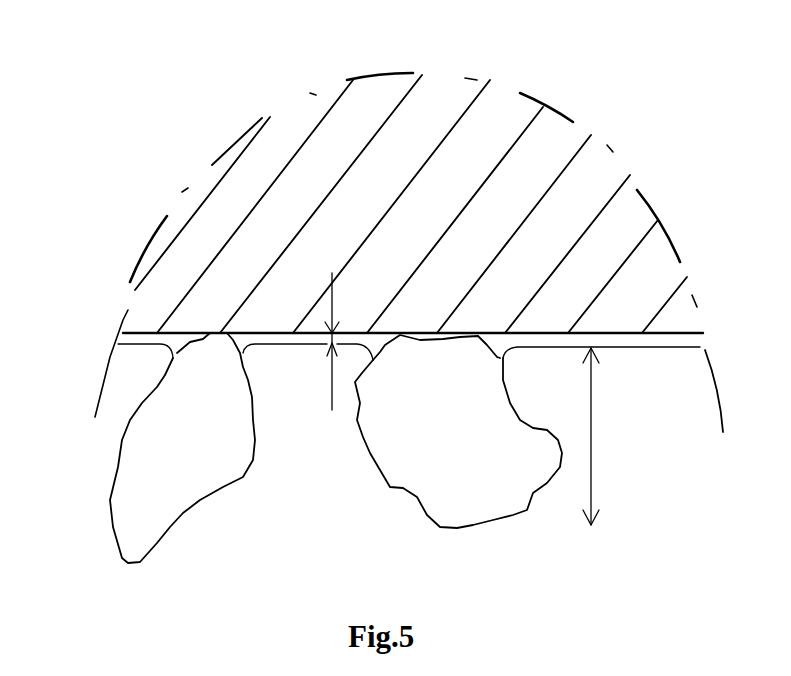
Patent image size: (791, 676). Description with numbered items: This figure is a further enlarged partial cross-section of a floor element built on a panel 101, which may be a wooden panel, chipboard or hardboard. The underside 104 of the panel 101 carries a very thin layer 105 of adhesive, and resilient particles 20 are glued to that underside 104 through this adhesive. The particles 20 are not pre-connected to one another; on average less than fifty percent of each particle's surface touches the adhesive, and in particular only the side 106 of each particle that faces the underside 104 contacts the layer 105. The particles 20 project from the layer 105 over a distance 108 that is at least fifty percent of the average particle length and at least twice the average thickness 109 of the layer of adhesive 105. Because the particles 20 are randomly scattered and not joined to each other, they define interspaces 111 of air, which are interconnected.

The panel 101 is at (297, 128).
The side of the particles 106 is at (211, 335).
The underside 104 is at (612, 338).
The layer of adhesive 105 is at (287, 340).
The average thickness of the layer of adhesive 109 is at (347, 345).
The distance 108 is at (593, 483).
The interspaces of air 111 is at (304, 460).
The resilient particles 20 is at (168, 503).